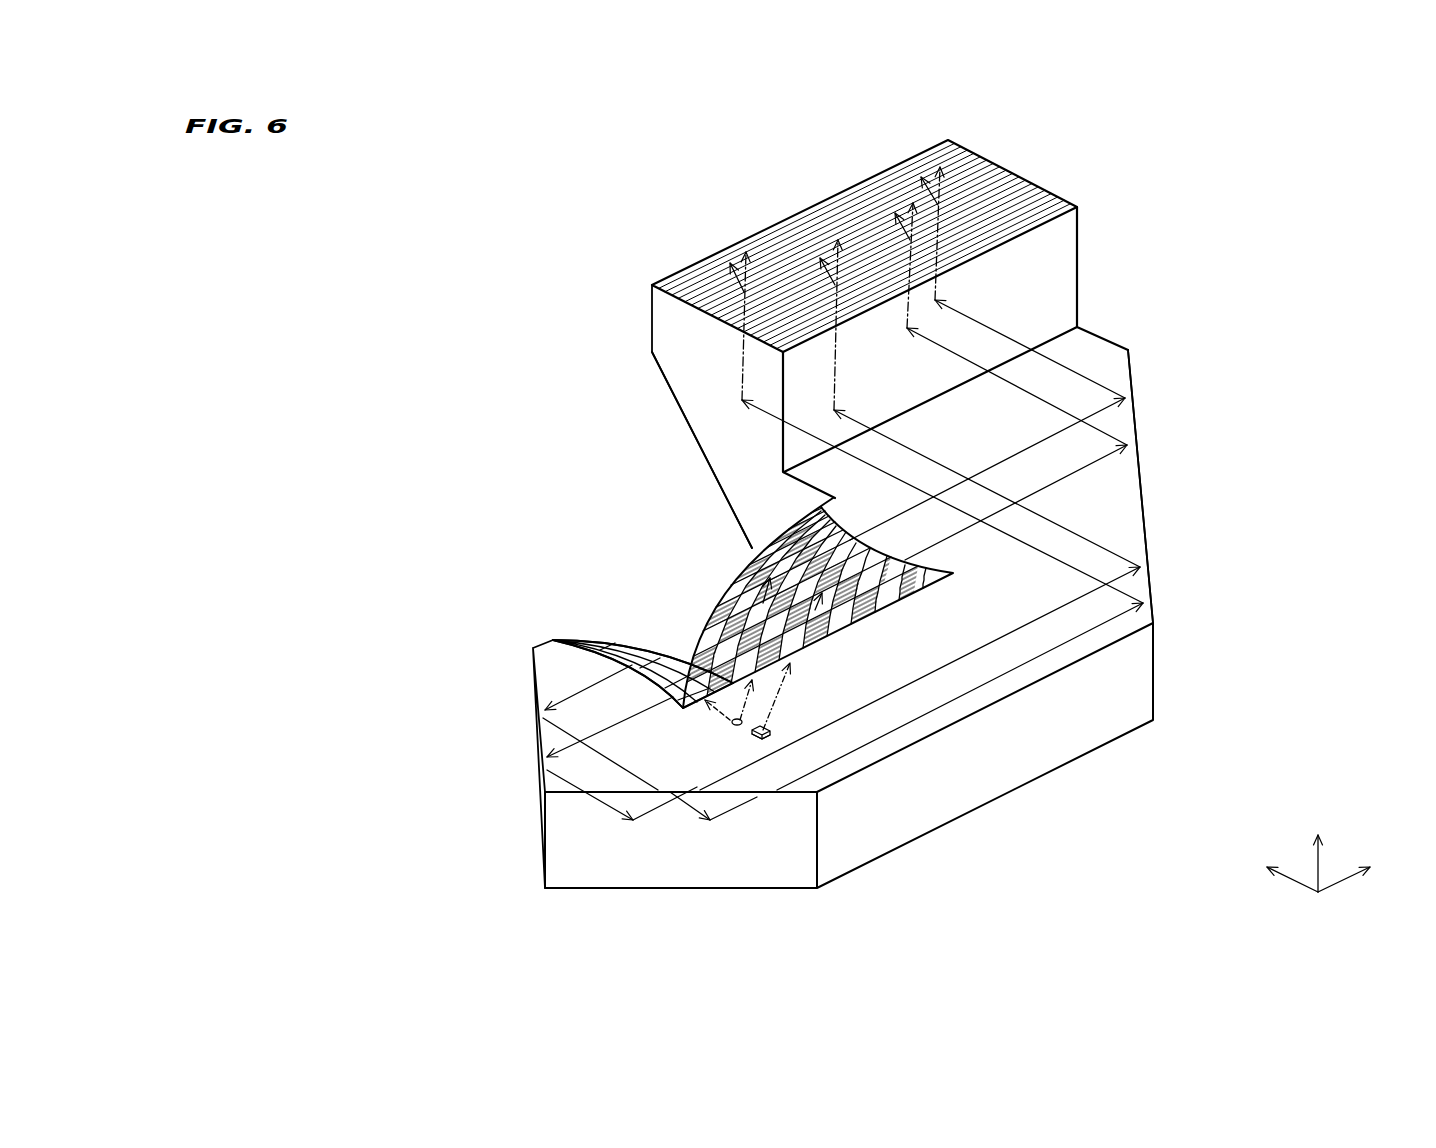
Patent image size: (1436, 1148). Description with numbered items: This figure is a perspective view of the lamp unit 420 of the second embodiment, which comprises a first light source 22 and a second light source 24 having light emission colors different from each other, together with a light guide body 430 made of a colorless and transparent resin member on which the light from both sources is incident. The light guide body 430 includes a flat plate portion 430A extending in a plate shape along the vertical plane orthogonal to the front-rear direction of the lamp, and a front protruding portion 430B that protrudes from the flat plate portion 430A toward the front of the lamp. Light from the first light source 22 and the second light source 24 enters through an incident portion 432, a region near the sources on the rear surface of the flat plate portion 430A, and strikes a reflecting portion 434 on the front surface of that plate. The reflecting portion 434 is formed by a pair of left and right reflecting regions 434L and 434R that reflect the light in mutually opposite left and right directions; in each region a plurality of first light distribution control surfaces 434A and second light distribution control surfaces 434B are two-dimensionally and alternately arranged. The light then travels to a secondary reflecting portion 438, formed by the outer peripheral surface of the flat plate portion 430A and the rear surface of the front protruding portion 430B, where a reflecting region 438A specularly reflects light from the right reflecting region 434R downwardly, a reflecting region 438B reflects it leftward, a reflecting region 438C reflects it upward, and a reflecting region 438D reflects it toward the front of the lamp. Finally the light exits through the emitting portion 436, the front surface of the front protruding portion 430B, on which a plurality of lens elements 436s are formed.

The lamp unit 420 is at (490, 320).
The emitting portion 436 is at (783, 230).
The lens elements 436s is at (857, 200).
The light guide body 430 is at (1310, 265).
The flat plate portion 430A is at (1140, 417).
The front protruding portion 430B is at (1087, 257).
The secondary reflecting portion 438 is at (1155, 660).
The reflecting region 438A is at (545, 775).
The reflecting region 438B is at (580, 850).
The reflecting region 438C is at (1142, 508).
The reflecting region 438D is at (700, 393).
The reflecting portion 434 is at (703, 627).
The left reflecting region 434L is at (650, 475).
The right reflecting region 434R is at (478, 550).
The first light distribution control surfaces 434A is at (760, 551).
The second light distribution control surfaces 434B is at (763, 552).
The first light source 22 is at (730, 732).
The second light source 24 is at (775, 725).
The incident portion 432 is at (775, 740).